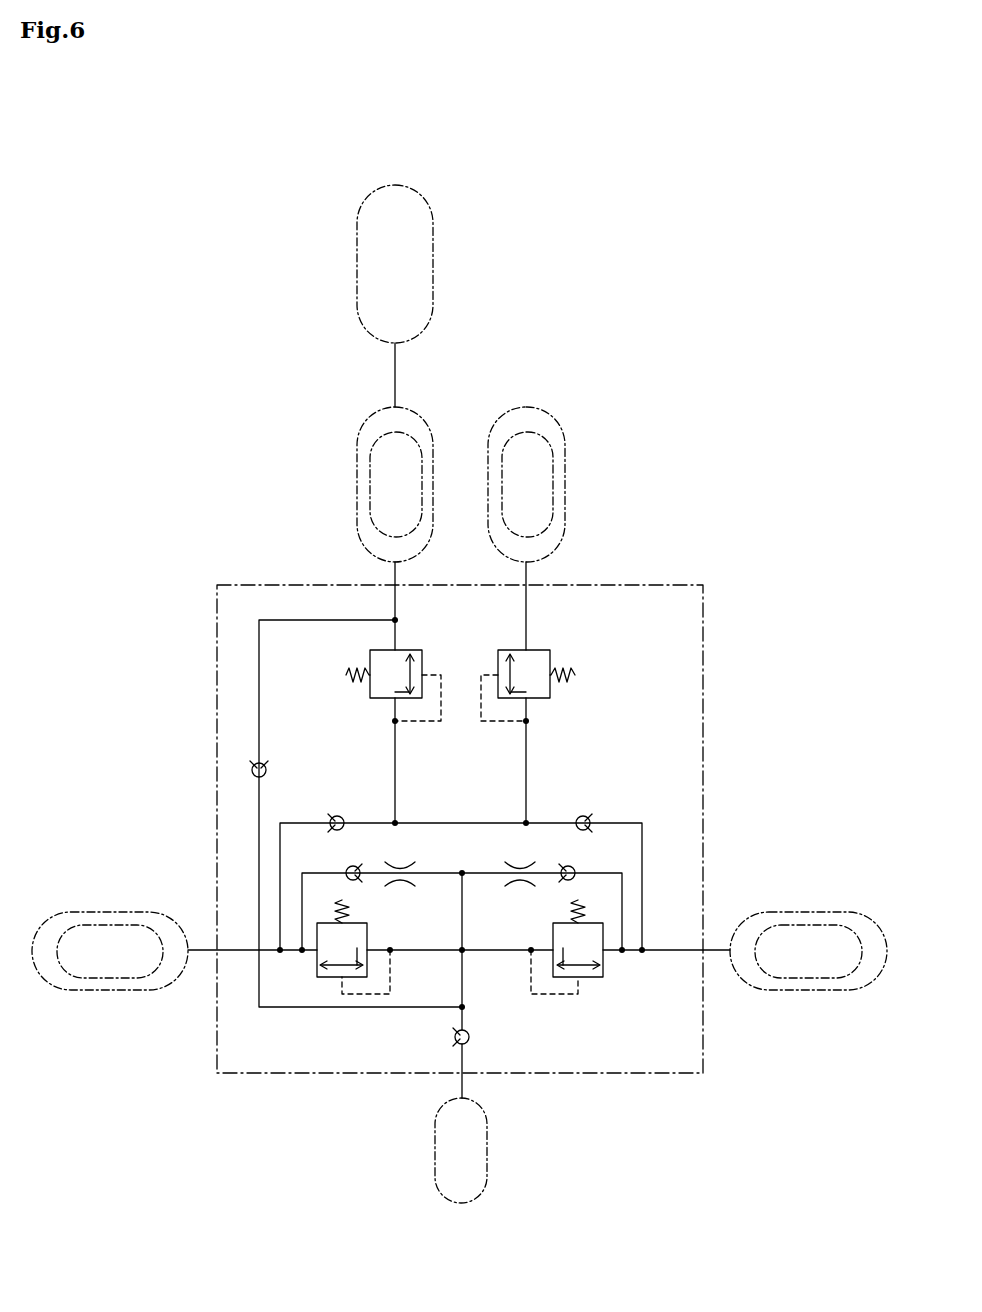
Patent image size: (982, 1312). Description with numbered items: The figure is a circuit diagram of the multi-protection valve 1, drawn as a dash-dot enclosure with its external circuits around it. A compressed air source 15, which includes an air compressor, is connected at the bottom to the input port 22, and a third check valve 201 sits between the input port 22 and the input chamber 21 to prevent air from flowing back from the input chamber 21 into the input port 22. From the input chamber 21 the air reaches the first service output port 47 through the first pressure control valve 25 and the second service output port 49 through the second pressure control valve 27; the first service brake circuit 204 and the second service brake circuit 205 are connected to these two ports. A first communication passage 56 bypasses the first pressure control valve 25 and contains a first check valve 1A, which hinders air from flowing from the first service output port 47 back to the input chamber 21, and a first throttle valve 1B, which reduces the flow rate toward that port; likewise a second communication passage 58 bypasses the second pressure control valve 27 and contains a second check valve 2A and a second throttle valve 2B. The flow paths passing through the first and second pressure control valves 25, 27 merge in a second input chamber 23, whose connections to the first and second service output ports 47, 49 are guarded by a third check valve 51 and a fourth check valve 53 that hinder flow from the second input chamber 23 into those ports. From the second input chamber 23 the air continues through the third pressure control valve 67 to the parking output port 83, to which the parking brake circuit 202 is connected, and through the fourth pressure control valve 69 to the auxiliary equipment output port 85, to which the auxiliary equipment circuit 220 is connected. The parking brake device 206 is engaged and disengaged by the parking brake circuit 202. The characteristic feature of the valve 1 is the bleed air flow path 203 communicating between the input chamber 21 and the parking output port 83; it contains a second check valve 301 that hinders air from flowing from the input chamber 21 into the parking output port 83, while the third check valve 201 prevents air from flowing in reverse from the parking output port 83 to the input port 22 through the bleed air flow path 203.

The multi-protection valve 1 is at (714, 541).
The parking brake device 206 is at (356, 256).
The parking brake circuit 202 is at (357, 483).
The auxiliary equipment circuit 220 is at (566, 468).
The parking output port 83 is at (410, 692).
The auxiliary equipment output port 85 is at (542, 692).
The third pressure control valve 67 is at (370, 698).
The fourth pressure control valve 69 is at (550, 698).
The second check valve 301 is at (251, 772).
The second input chamber 23 is at (477, 809).
The third check valve 51 is at (337, 815).
The fourth check valve 53 is at (584, 815).
The input chamber 21 is at (503, 1002).
The first check valve 1A is at (345, 868).
The second check valve 2A is at (577, 868).
The first throttle valve 1B is at (392, 863).
The first communication passage 56 is at (437, 873).
The second communication passage 58 is at (481, 873).
The second throttle valve 2B is at (528, 863).
The first service output port 47 is at (252, 938).
The second service output port 49 is at (666, 938).
The first pressure control valve 25 is at (367, 927).
The second pressure control valve 27 is at (553, 927).
The third check valve 201 is at (470, 1034).
The input port 22 is at (444, 1071).
The compressed air source 15 is at (487, 1153).
The bleed air flow path 203 is at (297, 1008).
The first service brake circuit 204 is at (102, 991).
The second service brake circuit 205 is at (797, 991).